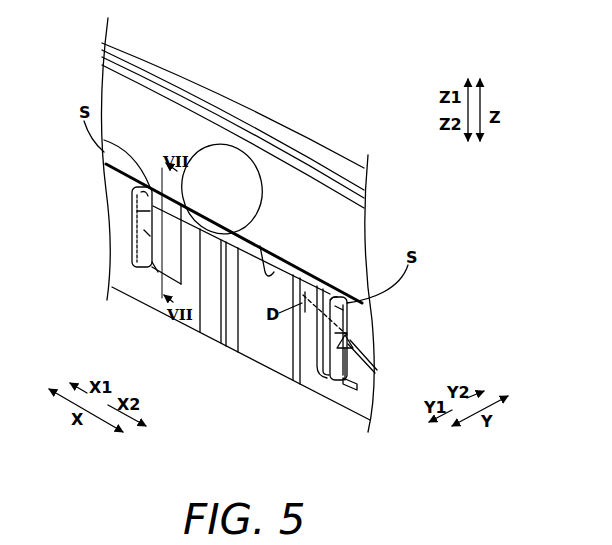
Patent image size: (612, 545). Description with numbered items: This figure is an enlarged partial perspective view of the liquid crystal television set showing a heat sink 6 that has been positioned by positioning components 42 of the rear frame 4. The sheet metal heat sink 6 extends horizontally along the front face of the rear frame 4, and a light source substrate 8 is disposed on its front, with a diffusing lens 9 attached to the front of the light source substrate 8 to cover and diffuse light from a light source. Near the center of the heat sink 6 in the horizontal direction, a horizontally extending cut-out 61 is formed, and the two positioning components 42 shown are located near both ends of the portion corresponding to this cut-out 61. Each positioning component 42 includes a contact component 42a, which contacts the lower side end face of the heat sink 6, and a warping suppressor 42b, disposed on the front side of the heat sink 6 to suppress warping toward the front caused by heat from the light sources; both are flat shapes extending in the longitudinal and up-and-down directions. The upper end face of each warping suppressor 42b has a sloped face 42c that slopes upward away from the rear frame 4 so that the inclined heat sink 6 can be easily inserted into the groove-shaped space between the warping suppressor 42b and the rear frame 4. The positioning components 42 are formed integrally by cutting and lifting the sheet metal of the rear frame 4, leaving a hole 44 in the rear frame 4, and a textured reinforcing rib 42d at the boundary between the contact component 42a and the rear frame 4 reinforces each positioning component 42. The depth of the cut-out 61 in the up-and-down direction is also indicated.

The rear frame 4 is at (362, 400).
The heat sink 6 is at (322, 160).
The light source substrate 8 is at (146, 108).
The diffusing lens 9 is at (216, 170).
The positioning component 42 is at (61, 180).
The contact component 42a is at (143, 211).
The warping suppressor 42b is at (140, 193).
The sloped face 42c is at (115, 160).
The reinforcing rib 42d is at (147, 233).
The hole 44 is at (151, 270).
The cut-out 61 is at (262, 252).